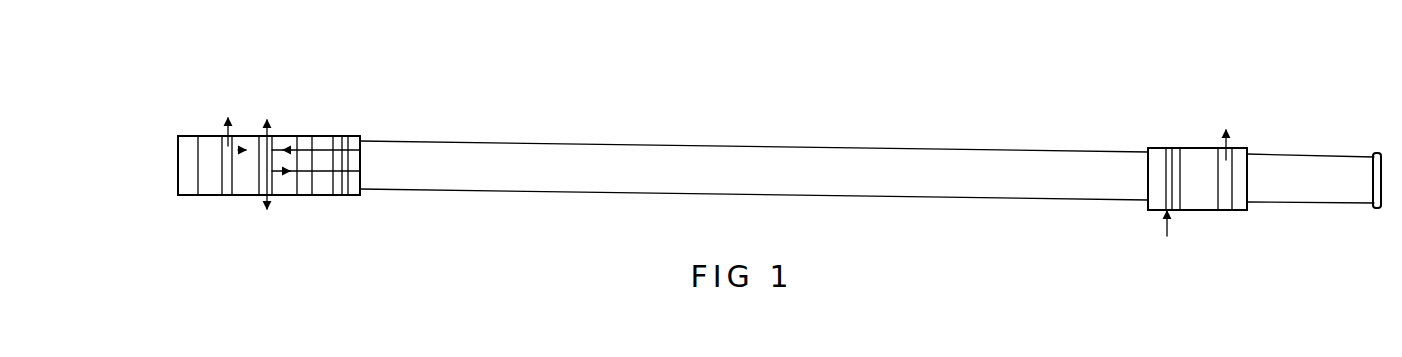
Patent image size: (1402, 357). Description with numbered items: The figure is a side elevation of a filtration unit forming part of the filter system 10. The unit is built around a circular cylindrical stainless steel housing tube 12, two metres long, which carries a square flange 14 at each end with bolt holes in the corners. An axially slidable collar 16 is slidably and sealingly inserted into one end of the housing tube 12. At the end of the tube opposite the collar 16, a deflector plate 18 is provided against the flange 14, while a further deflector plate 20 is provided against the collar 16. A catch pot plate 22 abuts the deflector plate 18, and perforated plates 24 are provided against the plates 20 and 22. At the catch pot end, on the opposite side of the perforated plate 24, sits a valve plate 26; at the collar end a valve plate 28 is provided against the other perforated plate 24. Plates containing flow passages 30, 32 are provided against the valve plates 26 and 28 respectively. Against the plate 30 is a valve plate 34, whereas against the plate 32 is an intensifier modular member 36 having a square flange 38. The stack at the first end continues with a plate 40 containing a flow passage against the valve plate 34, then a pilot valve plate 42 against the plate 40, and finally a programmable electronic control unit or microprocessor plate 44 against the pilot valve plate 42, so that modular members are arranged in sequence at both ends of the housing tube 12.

The filter system 10 is at (1010, 107).
The housing tube 12 is at (798, 165).
The flange 14 is at (350, 170).
The axially slidable collar 16 is at (1166, 237).
The deflector plate 18 is at (340, 147).
The deflector plate 20 is at (1178, 155).
The catch pot plate 22 is at (323, 160).
The perforated plate 24 is at (305, 157).
The valve plate 26 is at (297, 160).
The valve plate 28 is at (1210, 160).
The plate containing flow passages 30 is at (267, 160).
The plate containing flow passages 32 is at (1227, 180).
The valve plate 34 is at (245, 183).
The intensifier modular member 36 is at (1328, 145).
The flange 38 is at (1237, 190).
The plate containing a flow passage 40 is at (225, 167).
The pilot valve plate 42 is at (208, 193).
The programmable electronic control unit or microprocessor plate 44 is at (186, 172).